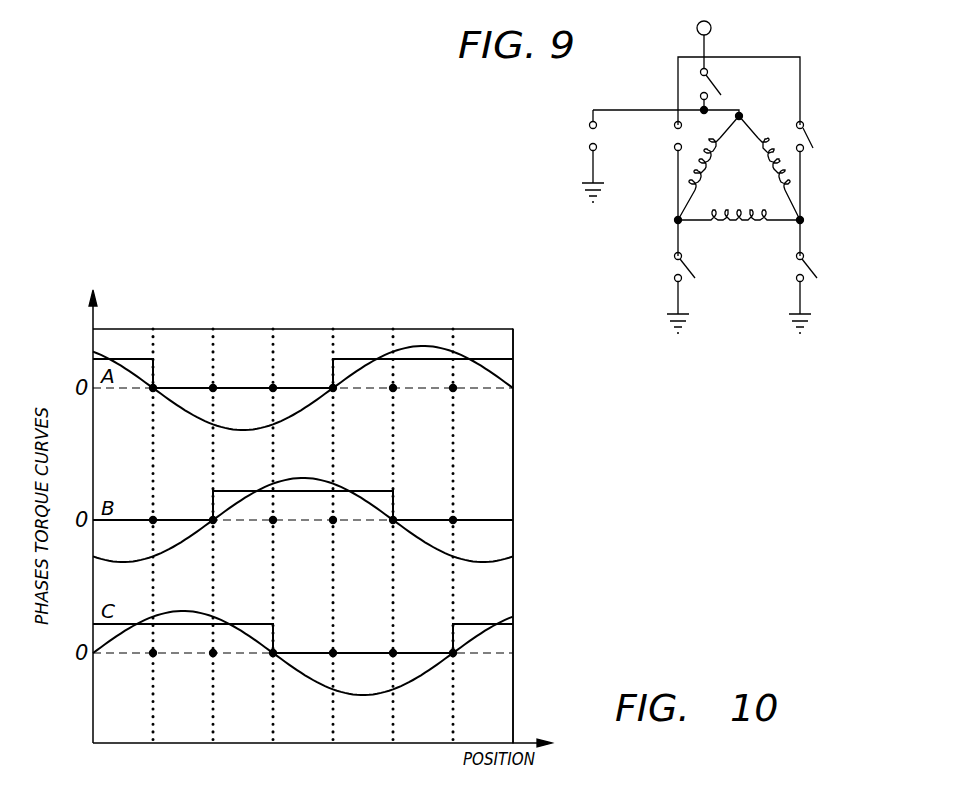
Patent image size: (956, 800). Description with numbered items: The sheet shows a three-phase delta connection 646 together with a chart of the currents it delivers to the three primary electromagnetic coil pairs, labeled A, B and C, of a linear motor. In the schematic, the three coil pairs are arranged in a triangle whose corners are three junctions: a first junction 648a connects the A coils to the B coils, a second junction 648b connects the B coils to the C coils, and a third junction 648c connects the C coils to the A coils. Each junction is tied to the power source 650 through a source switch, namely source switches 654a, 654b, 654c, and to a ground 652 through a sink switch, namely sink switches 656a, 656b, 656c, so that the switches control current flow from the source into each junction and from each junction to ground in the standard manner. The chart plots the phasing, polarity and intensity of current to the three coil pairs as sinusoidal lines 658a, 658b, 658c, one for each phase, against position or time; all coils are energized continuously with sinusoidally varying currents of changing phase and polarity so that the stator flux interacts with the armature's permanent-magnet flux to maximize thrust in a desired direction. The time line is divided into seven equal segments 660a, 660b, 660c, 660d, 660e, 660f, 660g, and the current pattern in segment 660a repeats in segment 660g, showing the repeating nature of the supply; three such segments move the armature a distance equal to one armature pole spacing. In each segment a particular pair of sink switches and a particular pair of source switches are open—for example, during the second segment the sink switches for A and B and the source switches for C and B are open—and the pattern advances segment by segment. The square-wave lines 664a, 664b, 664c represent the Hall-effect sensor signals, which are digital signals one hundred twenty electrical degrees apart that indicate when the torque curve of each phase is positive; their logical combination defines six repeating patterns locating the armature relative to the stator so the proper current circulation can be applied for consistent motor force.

In FIG. 9, the three-phase delta connection 646 is at (545, 174).
In FIG. 9, the power source 650 is at (709, 25).
In FIG. 9, the ground 652 is at (587, 198).
In FIG. 9, the source switch 654a is at (808, 127).
In FIG. 9, the source switch 654b is at (719, 80).
In FIG. 9, the source switch 654c is at (670, 143).
In FIG. 9, the sink switch 656a is at (790, 270).
In FIG. 9, the sink switch 656b is at (588, 133).
In FIG. 9, the sink switch 656c is at (668, 270).
In FIG. 9, the first junction 648a is at (803, 225).
In FIG. 9, the second junction 648b is at (741, 112).
In FIG. 9, the third junction 648c is at (675, 225).
In FIG. 10, the sinusoidal line 658a is at (205, 420).
In FIG. 10, the sinusoidal line 658b is at (170, 545).
In FIG. 10, the sinusoidal line 658c is at (320, 683).
In FIG. 10, the Hall-effect sensor signal line 664a is at (345, 358).
In FIG. 10, the Hall-effect sensor signal line 664b is at (383, 490).
In FIG. 10, the Hall-effect sensor signal line 664c is at (260, 623).
In FIG. 10, the time segment 660a is at (147, 737).
In FIG. 10, the time segment 660b is at (207, 737).
In FIG. 10, the time segment 660c is at (267, 737).
In FIG. 10, the time segment 660d is at (327, 737).
In FIG. 10, the time segment 660e is at (387, 737).
In FIG. 10, the time segment 660f is at (447, 737).
In FIG. 10, the time segment 660g is at (507, 737).